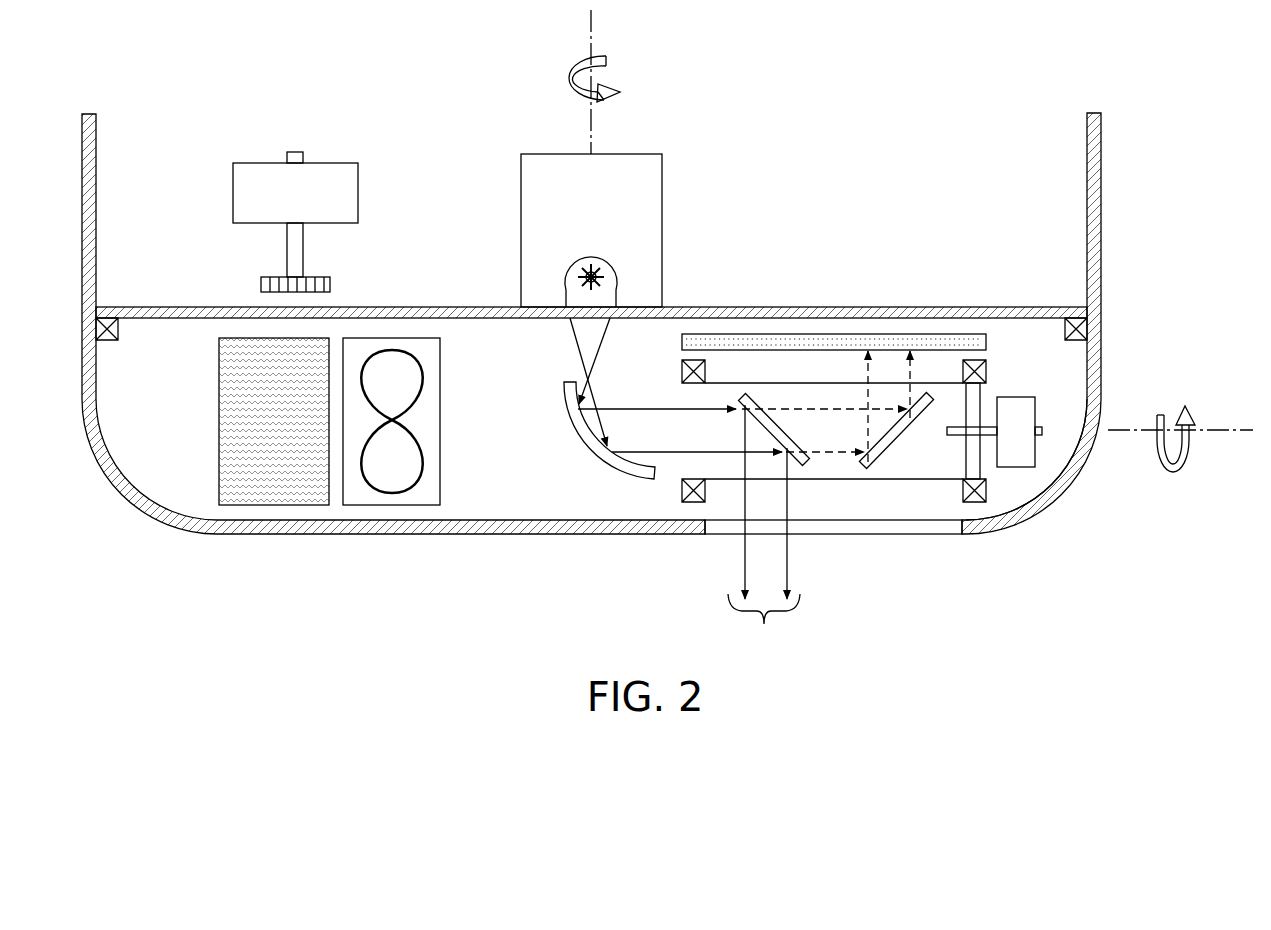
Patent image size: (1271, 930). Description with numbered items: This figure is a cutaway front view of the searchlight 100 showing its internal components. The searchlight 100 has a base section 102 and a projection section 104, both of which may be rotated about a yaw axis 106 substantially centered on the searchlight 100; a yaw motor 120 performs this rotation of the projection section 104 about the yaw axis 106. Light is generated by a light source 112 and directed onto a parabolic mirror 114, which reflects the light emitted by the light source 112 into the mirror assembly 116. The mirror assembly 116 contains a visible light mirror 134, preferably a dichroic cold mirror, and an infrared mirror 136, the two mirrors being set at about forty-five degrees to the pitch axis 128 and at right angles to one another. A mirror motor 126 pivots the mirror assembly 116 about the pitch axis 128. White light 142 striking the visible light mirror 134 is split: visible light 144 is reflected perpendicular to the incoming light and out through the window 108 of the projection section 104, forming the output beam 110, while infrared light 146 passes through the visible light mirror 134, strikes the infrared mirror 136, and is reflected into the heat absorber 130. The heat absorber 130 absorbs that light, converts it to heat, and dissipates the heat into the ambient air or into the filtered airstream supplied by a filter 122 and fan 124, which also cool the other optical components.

The searchlight 100 is at (1012, 89).
The base section 102 is at (1101, 175).
The projection section 104 is at (1057, 490).
The yaw axis 106 is at (591, 43).
The window 108 is at (905, 532).
The output beam 110 is at (764, 626).
The light source 112 is at (662, 207).
The parabolic mirror 114 is at (573, 437).
The mirror assembly 116 is at (1010, 374).
The yaw motor 120 is at (331, 166).
The filter 122 is at (225, 416).
The fan 124 is at (440, 420).
The mirror motor 126 is at (1030, 407).
The pitch axis 128 is at (1225, 430).
The heat absorber 130 is at (798, 340).
The visible light mirror 134 is at (790, 441).
The infrared mirror 136 is at (905, 432).
The white light 142 is at (577, 343).
The visible light 144 is at (739, 571).
The infrared light 146 is at (866, 369).